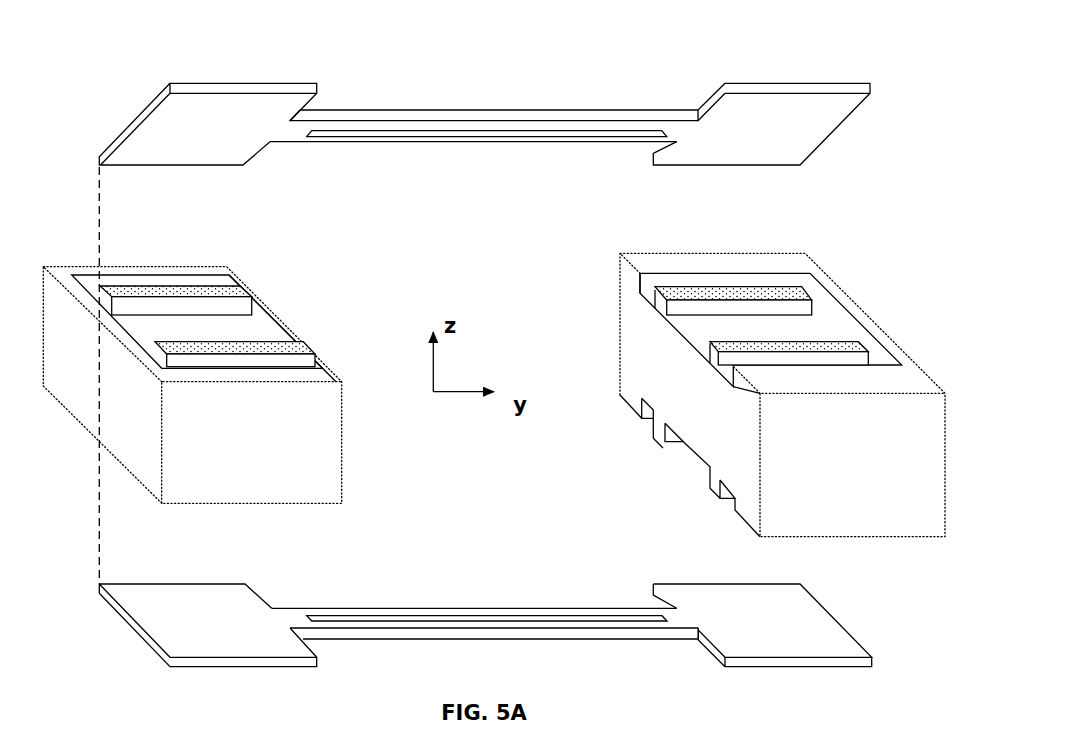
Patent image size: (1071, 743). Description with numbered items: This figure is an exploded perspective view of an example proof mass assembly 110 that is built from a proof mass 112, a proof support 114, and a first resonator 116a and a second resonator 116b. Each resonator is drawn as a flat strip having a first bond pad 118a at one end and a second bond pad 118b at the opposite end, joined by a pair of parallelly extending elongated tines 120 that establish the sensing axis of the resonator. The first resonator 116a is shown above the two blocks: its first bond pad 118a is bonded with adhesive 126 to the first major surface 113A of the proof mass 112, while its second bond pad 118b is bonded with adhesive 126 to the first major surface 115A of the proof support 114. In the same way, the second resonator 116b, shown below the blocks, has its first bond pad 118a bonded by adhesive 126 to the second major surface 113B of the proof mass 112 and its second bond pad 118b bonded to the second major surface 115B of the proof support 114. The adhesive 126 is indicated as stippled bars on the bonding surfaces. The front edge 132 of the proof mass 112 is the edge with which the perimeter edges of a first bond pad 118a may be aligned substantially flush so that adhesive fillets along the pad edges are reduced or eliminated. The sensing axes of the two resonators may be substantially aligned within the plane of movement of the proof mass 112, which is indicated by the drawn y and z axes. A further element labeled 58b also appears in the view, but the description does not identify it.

The proof mass assembly 110 is at (517, 345).
The proof mass 112 is at (902, 428).
The proof support 114 is at (287, 466).
The first major surface of proof mass 113A is at (777, 252).
The second major surface of proof mass 113B is at (656, 441).
The first major surface of proof support 115A is at (138, 262).
The second major surface of proof support 115B is at (124, 470).
The first resonator 116a is at (342, 102).
The second resonator 116b is at (289, 607).
The first bond pad 118a is at (797, 139).
The second bond pad 118b is at (227, 146).
The elongated tines 120 is at (488, 142).
The adhesive 126 is at (286, 345).
The front edge of proof mass 132 is at (655, 381).
The axis of rotation 58b is at (339, 231).